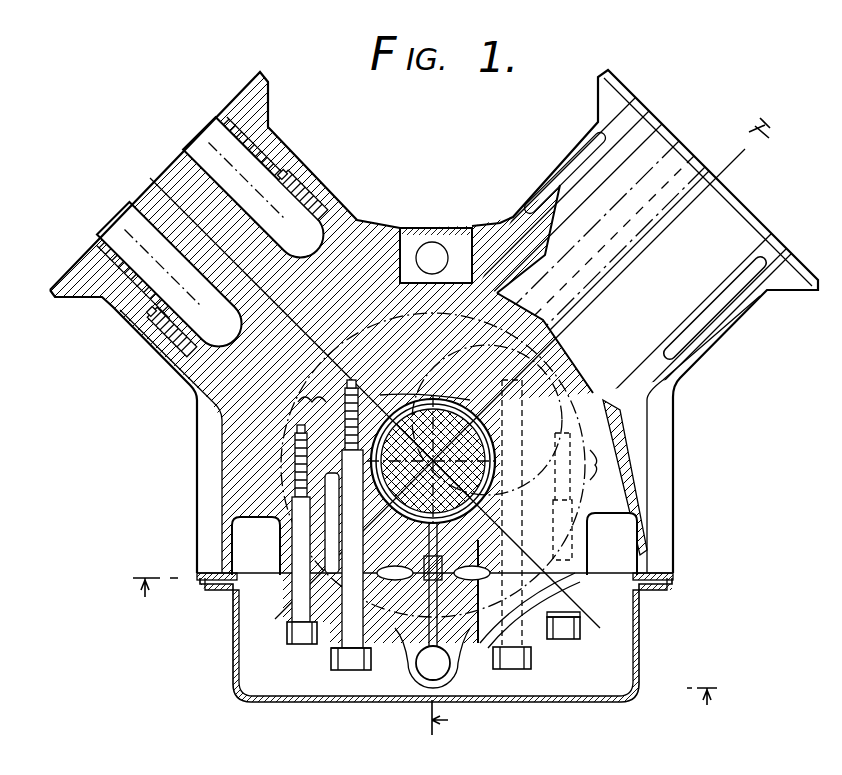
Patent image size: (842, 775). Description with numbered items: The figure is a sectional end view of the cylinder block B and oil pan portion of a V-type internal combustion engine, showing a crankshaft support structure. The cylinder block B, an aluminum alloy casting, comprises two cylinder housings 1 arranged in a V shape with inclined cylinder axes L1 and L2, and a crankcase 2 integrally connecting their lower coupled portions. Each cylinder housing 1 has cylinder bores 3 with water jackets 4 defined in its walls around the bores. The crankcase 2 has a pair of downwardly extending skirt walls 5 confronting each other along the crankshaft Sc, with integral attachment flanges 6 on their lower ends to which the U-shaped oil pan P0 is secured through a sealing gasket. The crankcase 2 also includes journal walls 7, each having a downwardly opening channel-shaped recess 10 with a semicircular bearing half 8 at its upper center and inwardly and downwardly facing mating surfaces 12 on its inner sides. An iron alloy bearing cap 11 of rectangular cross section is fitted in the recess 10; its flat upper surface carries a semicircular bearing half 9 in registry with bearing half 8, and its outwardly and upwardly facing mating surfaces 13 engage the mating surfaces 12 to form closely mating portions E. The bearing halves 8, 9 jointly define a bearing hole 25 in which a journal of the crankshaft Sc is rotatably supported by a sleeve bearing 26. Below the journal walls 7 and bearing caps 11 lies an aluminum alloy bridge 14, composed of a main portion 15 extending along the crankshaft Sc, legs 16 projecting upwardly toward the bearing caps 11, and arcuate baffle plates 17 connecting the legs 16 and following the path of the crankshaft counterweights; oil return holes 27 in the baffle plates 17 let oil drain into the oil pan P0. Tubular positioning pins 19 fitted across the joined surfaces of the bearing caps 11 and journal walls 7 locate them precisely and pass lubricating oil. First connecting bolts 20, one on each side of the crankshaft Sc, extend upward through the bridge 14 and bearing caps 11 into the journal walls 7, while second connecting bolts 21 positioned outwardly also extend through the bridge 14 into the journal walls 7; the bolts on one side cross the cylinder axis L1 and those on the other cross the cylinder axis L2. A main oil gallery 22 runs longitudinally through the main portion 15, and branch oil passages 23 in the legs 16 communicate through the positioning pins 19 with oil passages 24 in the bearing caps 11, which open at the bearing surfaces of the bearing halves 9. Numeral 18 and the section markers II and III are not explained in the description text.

The cylinder housing 1 is at (312, 160).
The crankcase 2 is at (673, 462).
The cylinder bore 3 is at (546, 346).
The water jacket 4 is at (258, 224).
The skirt wall 5 is at (222, 541).
The attachment flange 6 is at (197, 574).
The journal wall 7 is at (383, 353).
The bearing half 8 is at (391, 449).
The bearing half 9 is at (420, 466).
The recess 10 is at (540, 512).
The bearing cap 11 is at (392, 553).
The mating surface 12 is at (350, 470).
The mating surface 13 is at (330, 462).
The bridge 14 is at (395, 690).
The main portion 15 is at (434, 655).
The leg 16 is at (488, 591).
The baffle plate 17 is at (292, 598).
The nut 18 is at (558, 639).
The positioning pin 19 is at (455, 591).
The first connecting bolt 20 is at (431, 669).
The second connecting bolt 21 is at (434, 642).
The main oil gallery 22 is at (428, 680).
The branch oil passage 23 is at (438, 612).
The oil passage 24 is at (442, 557).
The bearing hole 25 is at (433, 461).
The sleeve bearing 26 is at (425, 391).
The oil return hole 27 is at (476, 622).
The cylinder block B is at (440, 212).
The closely mating portion E is at (454, 429).
The crankshaft Sc is at (433, 465).
The cylinder axis L1 is at (369, 397).
The cylinder axis L2 is at (499, 393).
The oil pan P0 is at (639, 622).
The section line II is at (610, 427).
The section line III is at (422, 653).